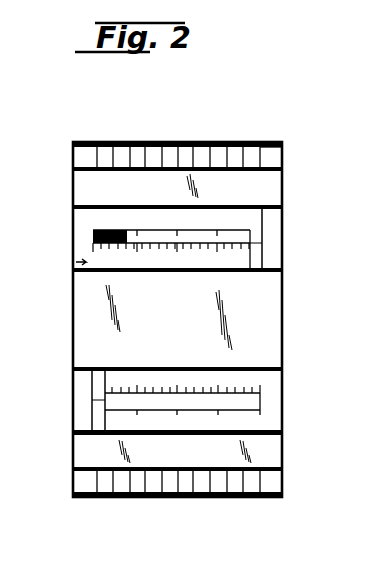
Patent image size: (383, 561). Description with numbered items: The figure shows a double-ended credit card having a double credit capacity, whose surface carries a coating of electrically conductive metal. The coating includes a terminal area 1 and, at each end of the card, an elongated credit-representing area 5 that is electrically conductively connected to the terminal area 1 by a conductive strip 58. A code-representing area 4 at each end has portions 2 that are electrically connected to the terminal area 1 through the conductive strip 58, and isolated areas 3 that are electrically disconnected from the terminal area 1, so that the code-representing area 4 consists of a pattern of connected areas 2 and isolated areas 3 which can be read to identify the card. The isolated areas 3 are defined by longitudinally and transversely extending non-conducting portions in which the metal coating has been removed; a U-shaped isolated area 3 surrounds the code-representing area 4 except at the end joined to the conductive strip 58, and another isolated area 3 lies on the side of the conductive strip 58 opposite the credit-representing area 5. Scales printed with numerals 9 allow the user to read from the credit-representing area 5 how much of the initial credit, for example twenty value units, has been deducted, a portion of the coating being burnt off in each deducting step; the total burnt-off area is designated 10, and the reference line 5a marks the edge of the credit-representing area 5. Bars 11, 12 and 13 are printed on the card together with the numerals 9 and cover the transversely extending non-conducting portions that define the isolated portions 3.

The terminal area 1 is at (262, 310).
The electrically connected portion 2 is at (153, 150).
The isolated area 3 is at (120, 150).
The code-representing area 4 is at (274, 152).
The credit-representing area 5 is at (226, 236).
The scale reference line 5a is at (131, 238).
The printed numerals 9 is at (76, 262).
The burnt-off area 10 is at (92, 237).
The bar 11 is at (80, 165).
The bar 12 is at (80, 200).
The bar 13 is at (88, 273).
The conductive strip 58 is at (256, 232).